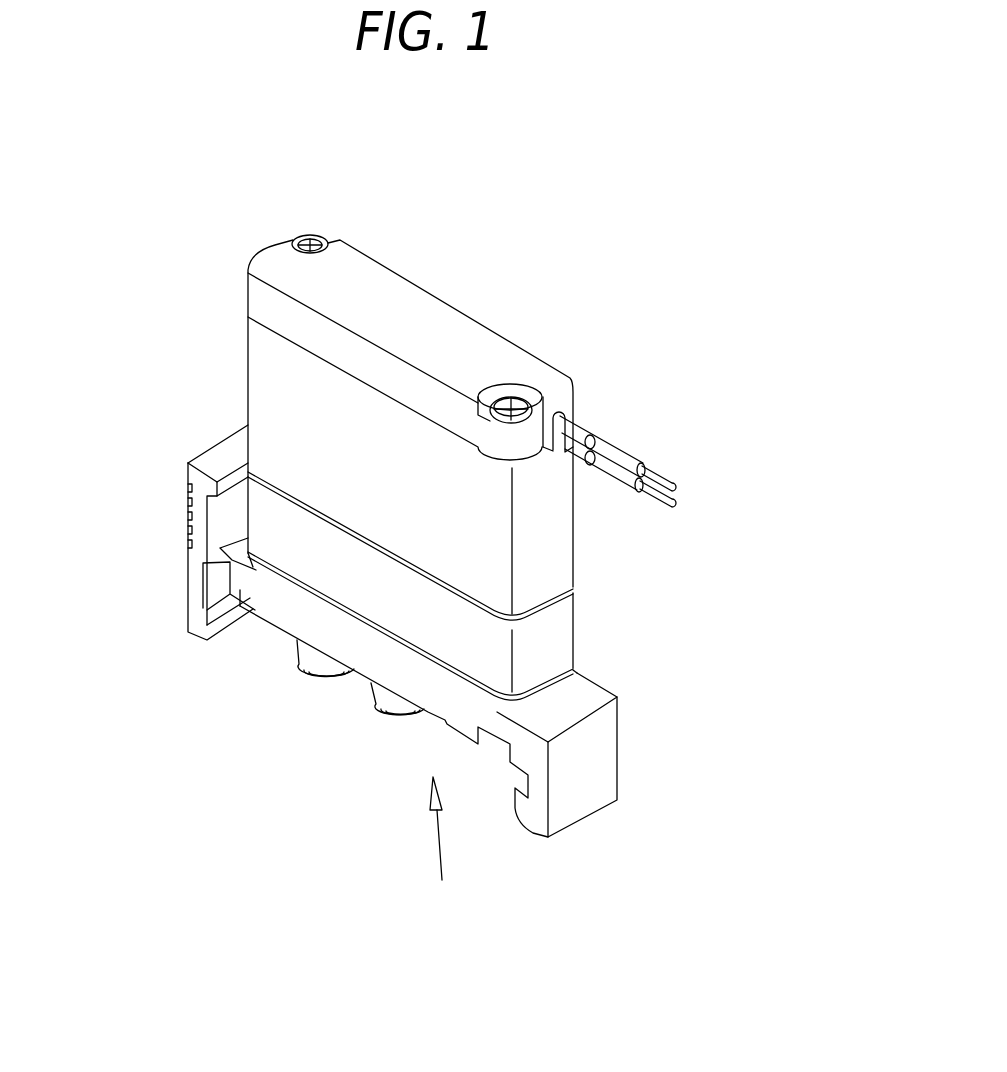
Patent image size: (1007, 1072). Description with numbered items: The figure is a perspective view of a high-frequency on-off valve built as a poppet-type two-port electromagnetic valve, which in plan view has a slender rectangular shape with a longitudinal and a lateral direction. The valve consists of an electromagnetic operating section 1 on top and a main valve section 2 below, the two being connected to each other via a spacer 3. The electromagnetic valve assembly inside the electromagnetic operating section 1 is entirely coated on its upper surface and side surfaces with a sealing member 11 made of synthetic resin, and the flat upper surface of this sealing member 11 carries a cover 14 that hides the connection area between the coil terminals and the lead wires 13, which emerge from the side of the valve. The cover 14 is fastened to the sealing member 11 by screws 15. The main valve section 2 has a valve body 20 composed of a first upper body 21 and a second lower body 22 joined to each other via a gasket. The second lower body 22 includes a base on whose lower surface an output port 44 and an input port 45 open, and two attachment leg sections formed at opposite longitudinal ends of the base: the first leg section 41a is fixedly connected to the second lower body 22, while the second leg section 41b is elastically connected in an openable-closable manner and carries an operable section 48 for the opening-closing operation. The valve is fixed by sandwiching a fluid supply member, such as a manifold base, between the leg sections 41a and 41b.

The electromagnetic operating section 1 is at (620, 345).
The main valve section 2 is at (440, 852).
The spacer 3 is at (572, 592).
The sealing member 11 is at (272, 377).
The lead wires 13 is at (617, 455).
The cover 14 is at (413, 292).
The screws 15 is at (309, 234).
The valve body 20 is at (722, 643).
The first upper body 21 is at (565, 638).
The second lower body 22 is at (605, 748).
The first leg section 41a is at (565, 813).
The second leg section 41b is at (188, 609).
The output port 44 is at (405, 713).
The input port 45 is at (325, 677).
The operable section 48 is at (188, 484).